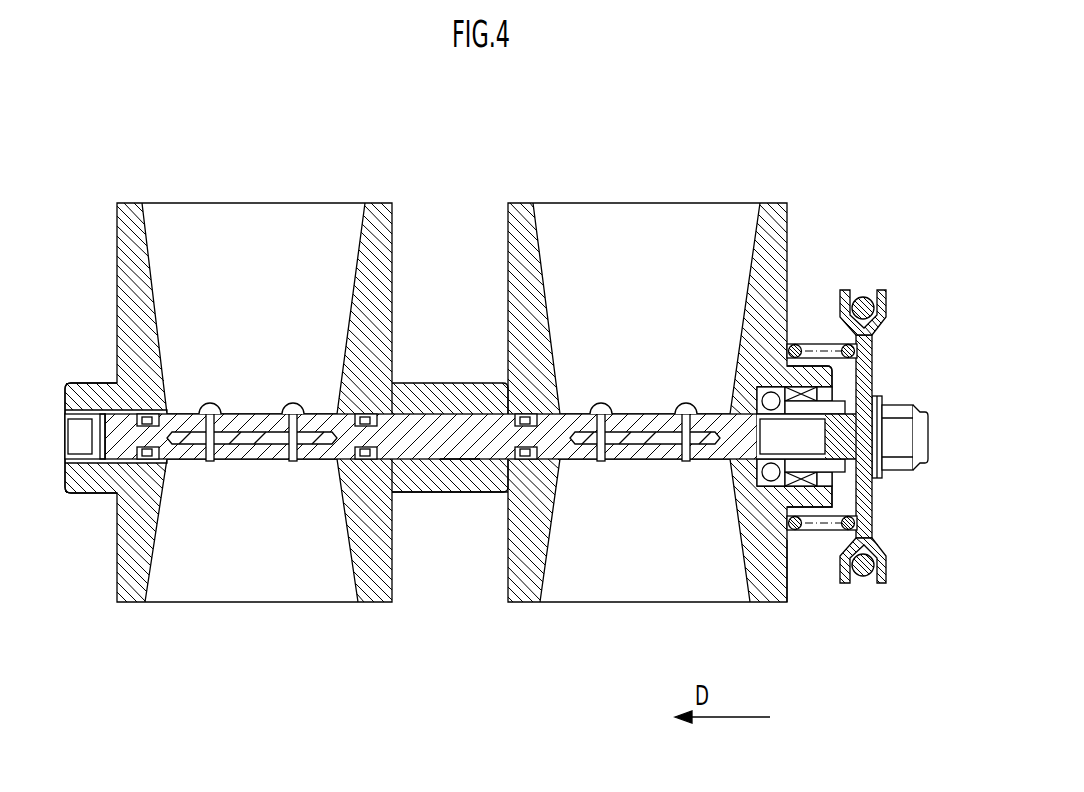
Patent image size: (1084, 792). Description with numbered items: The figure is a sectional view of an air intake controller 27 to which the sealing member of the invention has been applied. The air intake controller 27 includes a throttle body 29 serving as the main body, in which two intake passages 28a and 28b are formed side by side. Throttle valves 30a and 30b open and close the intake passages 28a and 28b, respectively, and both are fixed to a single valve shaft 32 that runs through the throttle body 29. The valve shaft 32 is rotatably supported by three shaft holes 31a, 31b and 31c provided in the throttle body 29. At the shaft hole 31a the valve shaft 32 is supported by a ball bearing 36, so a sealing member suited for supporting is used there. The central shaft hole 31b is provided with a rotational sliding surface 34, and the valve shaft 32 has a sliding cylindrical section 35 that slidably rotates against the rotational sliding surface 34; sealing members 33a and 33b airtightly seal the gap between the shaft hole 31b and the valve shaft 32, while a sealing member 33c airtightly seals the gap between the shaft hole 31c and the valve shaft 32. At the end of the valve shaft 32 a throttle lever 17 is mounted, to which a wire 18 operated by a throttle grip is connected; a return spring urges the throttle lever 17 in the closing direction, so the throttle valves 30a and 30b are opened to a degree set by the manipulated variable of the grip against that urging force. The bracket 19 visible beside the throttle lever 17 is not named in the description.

The air intake controller 27 is at (757, 108).
The intake passage 28a is at (645, 222).
The intake passage 28b is at (250, 222).
The throttle body 29 is at (790, 585).
The throttle valve 30a is at (645, 445).
The throttle valve 30b is at (260, 445).
The shaft hole 31a is at (760, 362).
The shaft hole 31b is at (458, 470).
The shaft hole 31c is at (95, 383).
The valve shaft 32 is at (421, 430).
The sealing member 33a is at (518, 412).
The sealing member 33b is at (370, 412).
The sealing member 33c is at (150, 412).
The rotational sliding surface 34 is at (458, 450).
The sliding cylindrical section 35 is at (420, 478).
The ball bearing 36 is at (815, 347).
The throttle lever 17 is at (872, 520).
The wire 18 is at (885, 312).
The bracket 19 is at (818, 335).